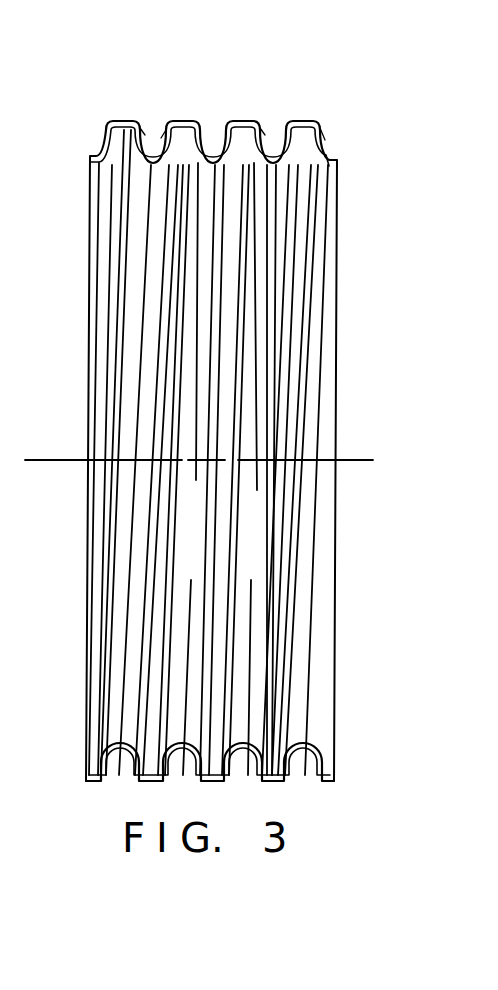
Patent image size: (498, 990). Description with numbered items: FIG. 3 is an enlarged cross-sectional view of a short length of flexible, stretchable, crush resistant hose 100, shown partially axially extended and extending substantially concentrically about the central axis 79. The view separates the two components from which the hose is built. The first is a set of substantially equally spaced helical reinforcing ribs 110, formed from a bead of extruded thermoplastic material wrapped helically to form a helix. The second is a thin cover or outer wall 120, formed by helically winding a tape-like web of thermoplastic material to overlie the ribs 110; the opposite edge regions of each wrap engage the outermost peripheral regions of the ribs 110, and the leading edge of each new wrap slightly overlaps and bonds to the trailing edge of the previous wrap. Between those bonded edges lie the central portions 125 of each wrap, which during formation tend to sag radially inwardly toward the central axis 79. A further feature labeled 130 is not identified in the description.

The short length of hose 100 is at (178, 57).
The reinforcing ribs 110 is at (180, 124).
The outer wall 120 is at (186, 121).
The central portions 125 is at (160, 150).
The rounded edge 130 is at (172, 125).
The central axis 79 is at (75, 450).